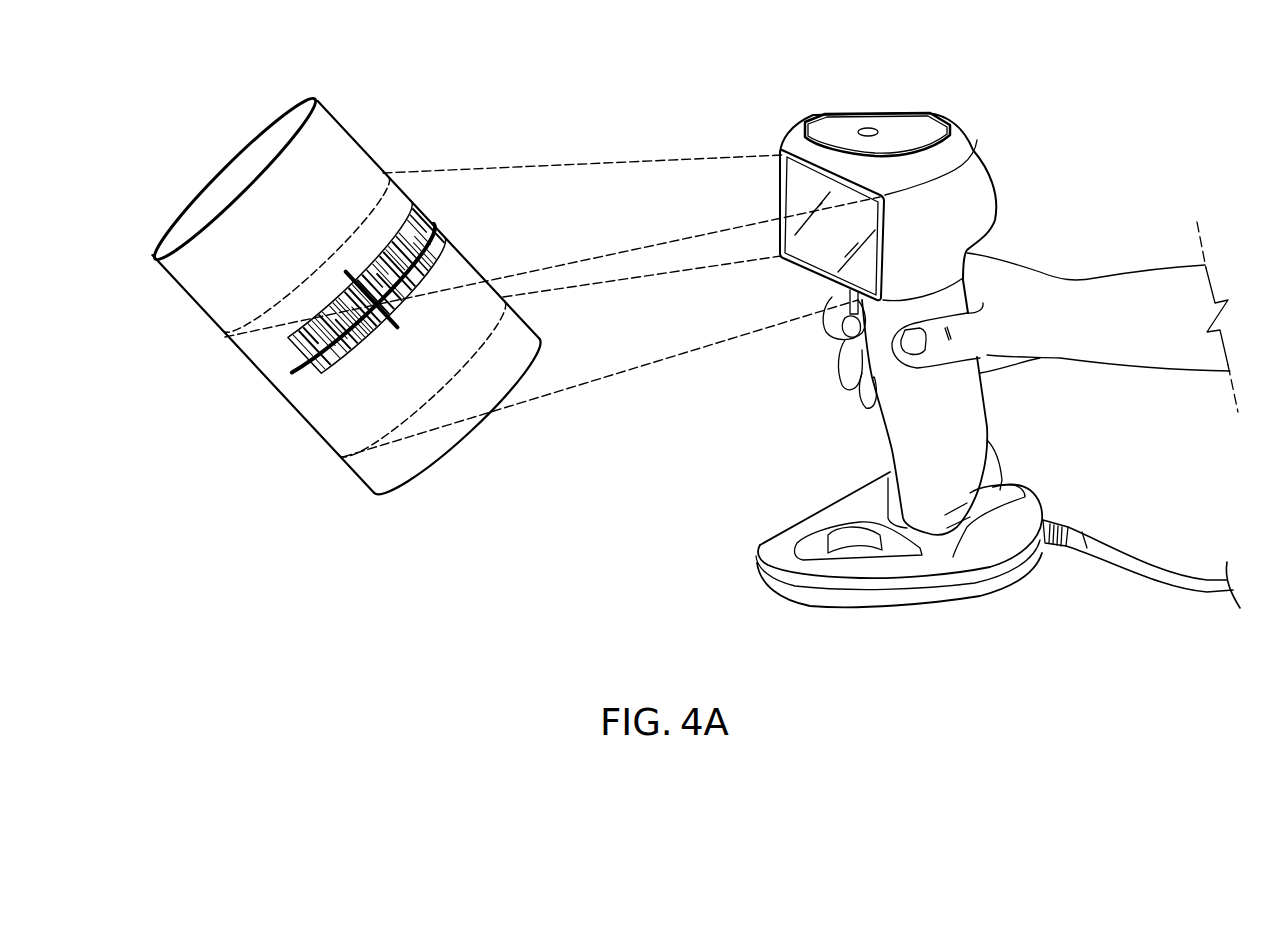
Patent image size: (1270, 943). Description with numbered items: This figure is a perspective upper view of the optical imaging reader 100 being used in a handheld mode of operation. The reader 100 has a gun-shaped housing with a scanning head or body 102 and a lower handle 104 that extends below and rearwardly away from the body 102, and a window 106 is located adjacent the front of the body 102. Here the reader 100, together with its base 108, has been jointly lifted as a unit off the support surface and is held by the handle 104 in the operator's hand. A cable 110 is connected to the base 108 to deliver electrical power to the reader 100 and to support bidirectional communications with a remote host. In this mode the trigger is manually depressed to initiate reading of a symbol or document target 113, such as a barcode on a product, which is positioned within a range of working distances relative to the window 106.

The optical imaging reader 100 is at (975, 73).
The scanning head 102 is at (868, 213).
The lower handle 104 is at (972, 395).
The window 106 is at (803, 198).
The base 108 is at (935, 604).
The cable 110 is at (1158, 587).
The symbol/document target 113 is at (322, 373).